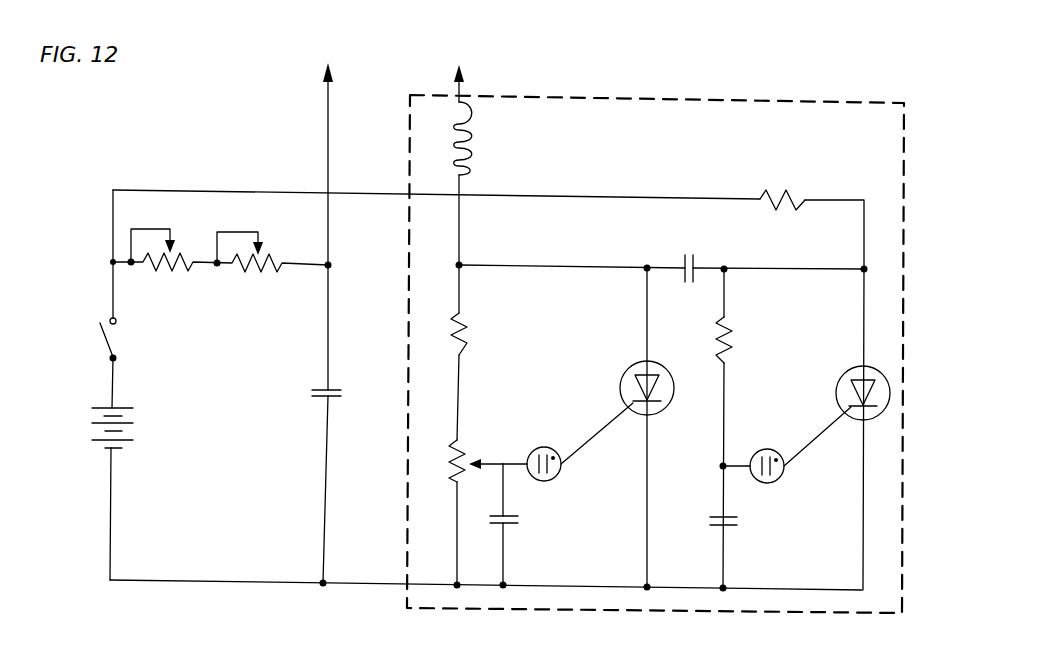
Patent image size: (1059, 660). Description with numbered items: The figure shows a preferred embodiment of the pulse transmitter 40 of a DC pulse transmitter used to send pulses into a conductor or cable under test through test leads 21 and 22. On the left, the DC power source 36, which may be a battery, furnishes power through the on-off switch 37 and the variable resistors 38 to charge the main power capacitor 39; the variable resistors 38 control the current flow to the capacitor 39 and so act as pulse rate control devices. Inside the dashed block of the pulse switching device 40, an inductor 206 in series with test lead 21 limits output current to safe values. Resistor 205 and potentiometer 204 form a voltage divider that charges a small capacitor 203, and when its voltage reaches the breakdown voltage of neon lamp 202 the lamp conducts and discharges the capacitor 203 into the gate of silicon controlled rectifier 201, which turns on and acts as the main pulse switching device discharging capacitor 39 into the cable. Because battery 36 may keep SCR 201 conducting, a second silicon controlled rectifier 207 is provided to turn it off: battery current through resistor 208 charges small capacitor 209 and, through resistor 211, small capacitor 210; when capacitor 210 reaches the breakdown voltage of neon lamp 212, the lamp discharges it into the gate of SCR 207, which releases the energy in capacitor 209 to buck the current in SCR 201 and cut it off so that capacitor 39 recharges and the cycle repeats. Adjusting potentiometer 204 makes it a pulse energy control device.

The test lead 21 is at (458, 76).
The test lead 22 is at (328, 154).
The DC power source 36 is at (98, 440).
The on-off switch 37 is at (105, 340).
The variable resistors 38 is at (170, 272).
The power capacitor 39 is at (318, 398).
The pulse switching device 40 is at (686, 99).
The silicon controlled rectifier 201 is at (628, 367).
The neon lamp 202 is at (546, 481).
The small capacitor 203 is at (512, 526).
The potentiometer 204 is at (468, 445).
The resistor 205 is at (468, 321).
The inductor 206 is at (470, 155).
The silicon controlled rectifier 207 is at (851, 370).
The resistor 208 is at (798, 197).
The small capacitor 209 is at (700, 256).
The small capacitor 210 is at (733, 528).
The resistor 211 is at (734, 322).
The neon lamp 212 is at (771, 484).